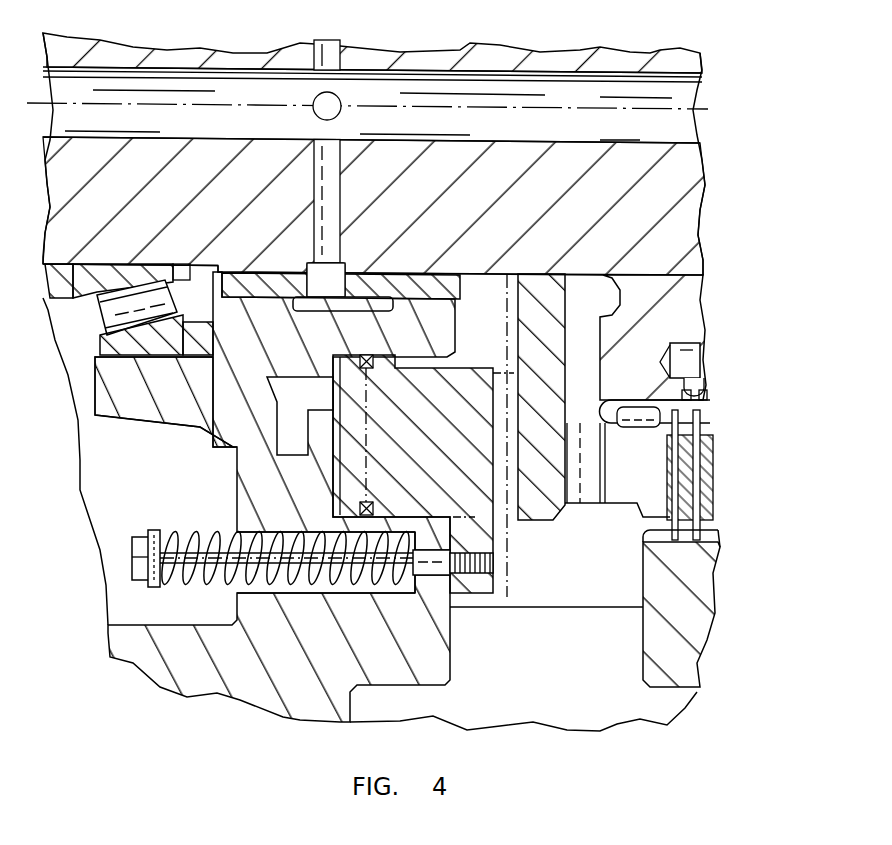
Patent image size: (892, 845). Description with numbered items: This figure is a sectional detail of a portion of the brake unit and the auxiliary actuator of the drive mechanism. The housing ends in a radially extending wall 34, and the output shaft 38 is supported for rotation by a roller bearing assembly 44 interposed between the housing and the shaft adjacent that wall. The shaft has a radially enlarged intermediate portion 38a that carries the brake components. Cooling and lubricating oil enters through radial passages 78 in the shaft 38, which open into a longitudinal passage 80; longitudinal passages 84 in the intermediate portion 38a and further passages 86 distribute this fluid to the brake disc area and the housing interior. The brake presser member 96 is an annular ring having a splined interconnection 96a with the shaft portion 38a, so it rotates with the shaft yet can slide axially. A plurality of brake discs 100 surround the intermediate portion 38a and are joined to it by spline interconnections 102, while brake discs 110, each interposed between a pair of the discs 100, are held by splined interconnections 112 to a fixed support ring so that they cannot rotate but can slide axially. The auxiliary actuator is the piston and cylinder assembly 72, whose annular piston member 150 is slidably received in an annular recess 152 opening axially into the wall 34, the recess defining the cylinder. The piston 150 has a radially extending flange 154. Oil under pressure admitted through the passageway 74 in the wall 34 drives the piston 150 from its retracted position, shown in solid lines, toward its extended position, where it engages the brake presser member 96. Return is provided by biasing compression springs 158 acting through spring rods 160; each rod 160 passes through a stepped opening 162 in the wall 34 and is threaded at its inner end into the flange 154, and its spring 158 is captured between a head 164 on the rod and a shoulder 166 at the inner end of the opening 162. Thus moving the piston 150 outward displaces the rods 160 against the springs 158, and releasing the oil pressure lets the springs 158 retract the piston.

The radially extending wall 34 is at (285, 685).
The output shaft 38 is at (606, 58).
The intermediate portion of shaft 38a is at (680, 305).
The roller bearing assembly 44 is at (82, 322).
The piston and cylinder assembly 72 is at (516, 604).
The passageway 74 is at (277, 440).
The radial passages 78 is at (332, 66).
The longitudinal passage 80 is at (453, 127).
The longitudinal passages 84 is at (700, 360).
The passages 86 is at (703, 377).
The brake presser member 96 is at (550, 490).
The splined interconnection 96a is at (632, 403).
The brake discs 100 is at (675, 470).
The spline interconnections 102 is at (700, 413).
The brake discs 110 is at (643, 525).
The splined interconnections 112 is at (687, 543).
The annular piston member 150 is at (467, 390).
The annular recess 152 is at (401, 513).
The radially extending flange 154 is at (467, 593).
The biasing compression springs 158 is at (228, 540).
The spring rods 160 is at (208, 583).
The stepped openings 162 is at (347, 588).
The head 164 is at (143, 543).
The shoulder 166 is at (410, 593).